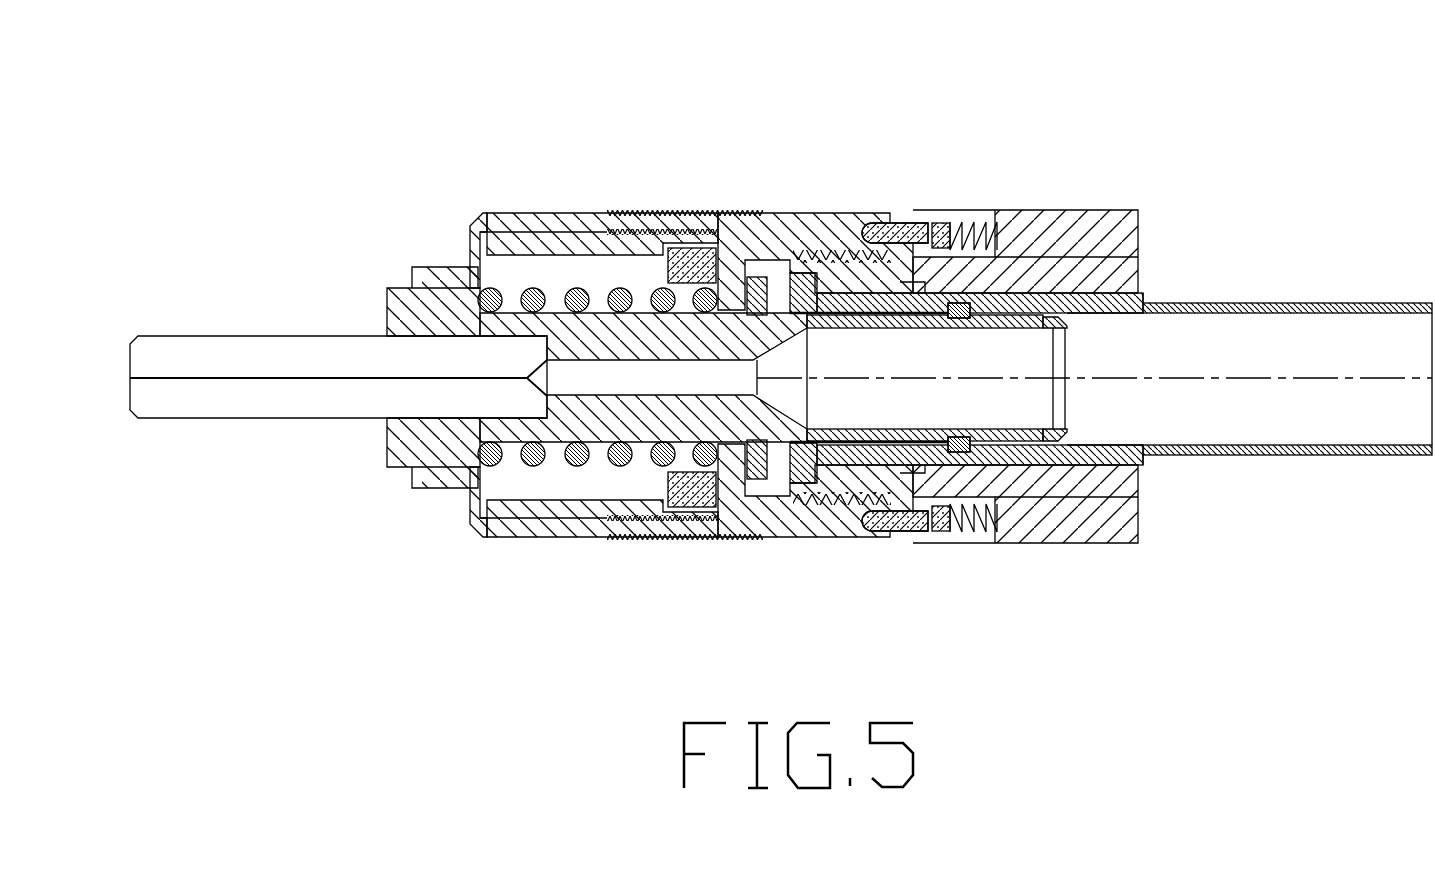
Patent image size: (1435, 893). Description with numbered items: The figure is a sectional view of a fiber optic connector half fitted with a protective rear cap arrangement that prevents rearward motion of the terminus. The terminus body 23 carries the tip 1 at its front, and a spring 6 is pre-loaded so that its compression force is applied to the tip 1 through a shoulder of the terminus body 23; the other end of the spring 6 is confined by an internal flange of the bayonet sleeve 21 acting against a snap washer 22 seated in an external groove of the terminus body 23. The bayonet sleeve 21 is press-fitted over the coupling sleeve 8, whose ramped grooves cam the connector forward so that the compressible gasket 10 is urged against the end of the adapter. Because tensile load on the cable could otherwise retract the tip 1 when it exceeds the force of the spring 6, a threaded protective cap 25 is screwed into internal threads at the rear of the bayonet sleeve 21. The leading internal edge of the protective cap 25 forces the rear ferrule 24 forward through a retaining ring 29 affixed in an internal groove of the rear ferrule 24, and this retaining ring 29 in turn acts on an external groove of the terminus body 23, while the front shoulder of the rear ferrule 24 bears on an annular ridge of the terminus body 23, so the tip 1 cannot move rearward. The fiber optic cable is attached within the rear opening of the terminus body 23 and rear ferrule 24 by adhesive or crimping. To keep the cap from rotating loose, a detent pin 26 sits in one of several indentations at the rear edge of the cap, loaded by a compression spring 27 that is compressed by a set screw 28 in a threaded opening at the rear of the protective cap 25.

The tip 1 is at (163, 345).
The spring 6 is at (530, 298).
The coupling sleeve 8 is at (556, 237).
The compressible gasket 10 is at (695, 255).
The bayonet sleeve 21 is at (740, 222).
The snap washer 22 is at (757, 468).
The terminus body 23 is at (393, 293).
The rear ferrule 24 is at (1225, 303).
The protective cap 25 is at (917, 210).
The detent pin 26 is at (880, 225).
The compression spring 27 is at (975, 230).
The set screw 28 is at (1092, 225).
The retaining ring 29 is at (962, 452).